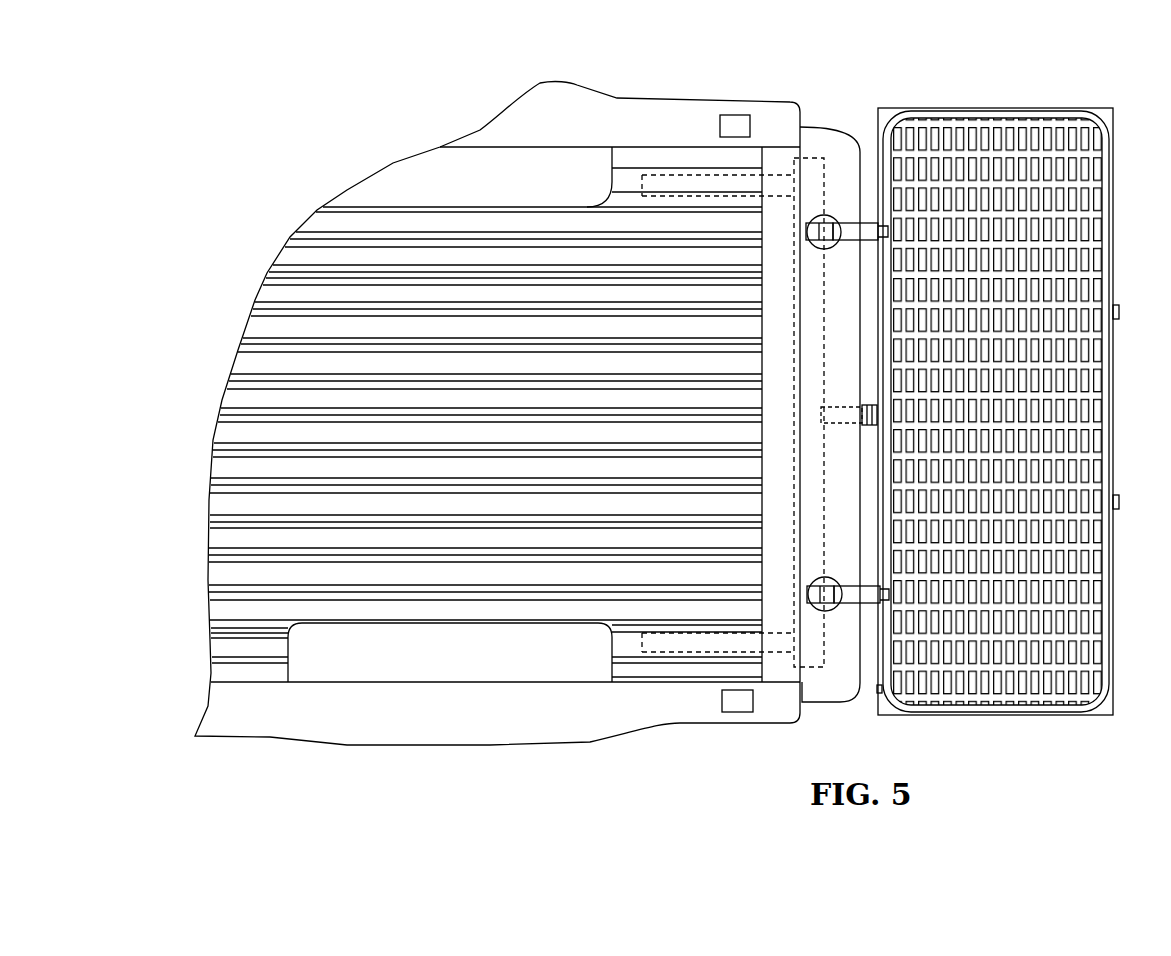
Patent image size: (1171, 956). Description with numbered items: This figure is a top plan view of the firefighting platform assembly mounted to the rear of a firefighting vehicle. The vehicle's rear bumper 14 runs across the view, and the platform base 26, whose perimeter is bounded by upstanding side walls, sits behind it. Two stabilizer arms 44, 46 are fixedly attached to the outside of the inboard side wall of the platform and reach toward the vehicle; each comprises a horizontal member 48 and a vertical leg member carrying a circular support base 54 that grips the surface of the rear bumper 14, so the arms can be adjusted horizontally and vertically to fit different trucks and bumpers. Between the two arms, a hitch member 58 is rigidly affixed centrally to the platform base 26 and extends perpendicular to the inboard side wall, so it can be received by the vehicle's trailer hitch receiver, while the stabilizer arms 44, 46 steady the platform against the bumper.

The rear bumper 14 is at (817, 703).
The platform base 26 is at (982, 110).
The stabilizer arm 44 is at (842, 212).
The stabilizer arm 46 is at (843, 625).
The horizontal member 48 is at (856, 222).
The circular support base 54 is at (822, 215).
The hitch member 58 is at (862, 407).